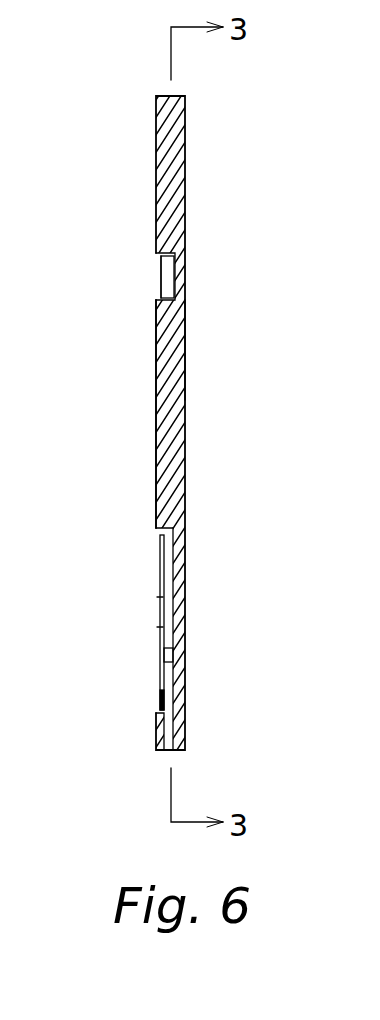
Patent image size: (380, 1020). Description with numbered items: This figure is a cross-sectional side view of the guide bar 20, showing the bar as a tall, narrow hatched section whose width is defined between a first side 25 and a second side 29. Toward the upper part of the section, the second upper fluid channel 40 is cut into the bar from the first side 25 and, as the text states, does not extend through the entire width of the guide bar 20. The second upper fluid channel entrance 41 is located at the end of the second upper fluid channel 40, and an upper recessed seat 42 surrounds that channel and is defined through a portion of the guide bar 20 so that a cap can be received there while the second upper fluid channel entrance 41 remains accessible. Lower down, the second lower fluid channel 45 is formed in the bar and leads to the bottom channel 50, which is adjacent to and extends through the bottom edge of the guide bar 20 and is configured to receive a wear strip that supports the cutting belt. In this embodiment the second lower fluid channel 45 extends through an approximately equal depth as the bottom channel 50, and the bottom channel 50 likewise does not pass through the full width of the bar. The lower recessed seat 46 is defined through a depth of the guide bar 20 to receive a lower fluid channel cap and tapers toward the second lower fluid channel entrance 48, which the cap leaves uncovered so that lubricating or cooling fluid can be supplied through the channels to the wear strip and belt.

The guide bar 20 is at (227, 173).
The first side 25 is at (157, 380).
The second side 29 is at (185, 333).
The second upper fluid channel 40 is at (175, 278).
The second upper fluid channel entrance 41 is at (158, 283).
The upper recessed seat 42 is at (160, 264).
The second lower fluid channel 45 is at (168, 580).
The lower recessed seat 46 is at (159, 700).
The second lower fluid channel entrance 48 is at (156, 535).
The bottom channel 50 is at (174, 703).